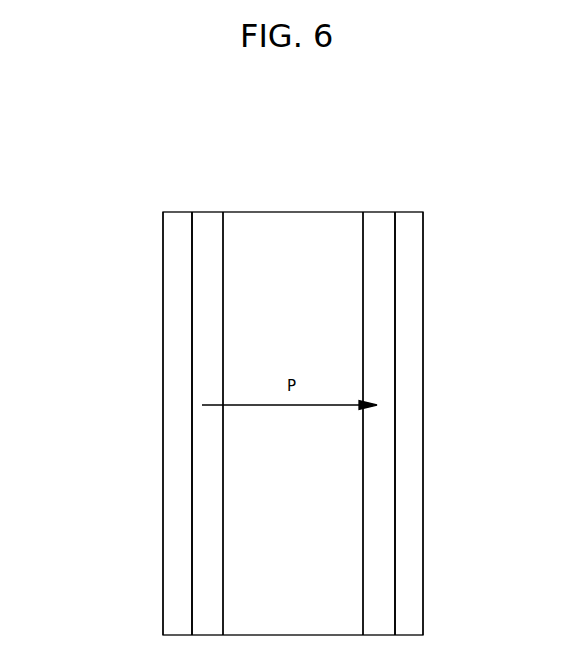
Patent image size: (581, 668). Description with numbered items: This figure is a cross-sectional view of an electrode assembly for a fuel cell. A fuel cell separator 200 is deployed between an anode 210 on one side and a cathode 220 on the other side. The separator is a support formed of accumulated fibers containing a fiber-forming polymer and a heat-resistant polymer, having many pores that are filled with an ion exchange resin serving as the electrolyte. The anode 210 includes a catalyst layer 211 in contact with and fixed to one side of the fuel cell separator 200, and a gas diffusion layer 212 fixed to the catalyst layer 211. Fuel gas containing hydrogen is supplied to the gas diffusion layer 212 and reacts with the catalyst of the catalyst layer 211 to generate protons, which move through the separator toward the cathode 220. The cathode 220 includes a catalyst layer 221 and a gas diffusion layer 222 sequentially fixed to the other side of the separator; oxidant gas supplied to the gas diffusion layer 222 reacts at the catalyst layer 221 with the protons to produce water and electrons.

The fuel cell separator 200 is at (283, 237).
The anode 210 is at (70, 312).
The catalyst layer 211 is at (207, 385).
The gas diffusion layer 212 is at (172, 318).
The cathode 220 is at (512, 298).
The catalyst layer 221 is at (383, 310).
The gas diffusion layer 222 is at (408, 367).